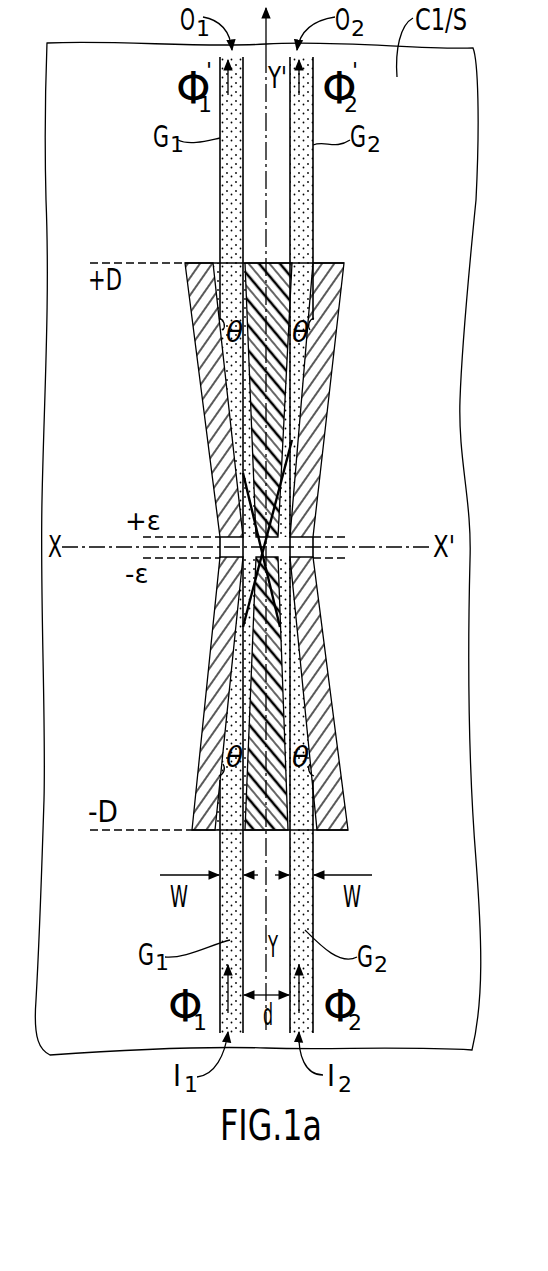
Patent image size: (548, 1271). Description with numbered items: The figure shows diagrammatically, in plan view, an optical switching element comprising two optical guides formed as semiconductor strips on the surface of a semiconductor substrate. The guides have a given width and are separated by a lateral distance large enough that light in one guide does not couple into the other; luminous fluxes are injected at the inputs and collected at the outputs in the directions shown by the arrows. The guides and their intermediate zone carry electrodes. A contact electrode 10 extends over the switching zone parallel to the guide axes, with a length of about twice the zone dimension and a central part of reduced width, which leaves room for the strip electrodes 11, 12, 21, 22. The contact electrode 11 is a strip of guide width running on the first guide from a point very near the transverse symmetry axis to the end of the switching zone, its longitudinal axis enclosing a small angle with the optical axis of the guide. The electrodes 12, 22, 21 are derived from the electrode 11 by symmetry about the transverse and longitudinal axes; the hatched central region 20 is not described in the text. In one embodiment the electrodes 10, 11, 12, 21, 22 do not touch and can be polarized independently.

The contact electrode 10 is at (273, 788).
The contact electrode 11 is at (208, 334).
The electrode 12 is at (210, 790).
The upper central electrode 20 is at (273, 567).
The electrode 21 is at (323, 756).
The electrode 22 is at (324, 327).